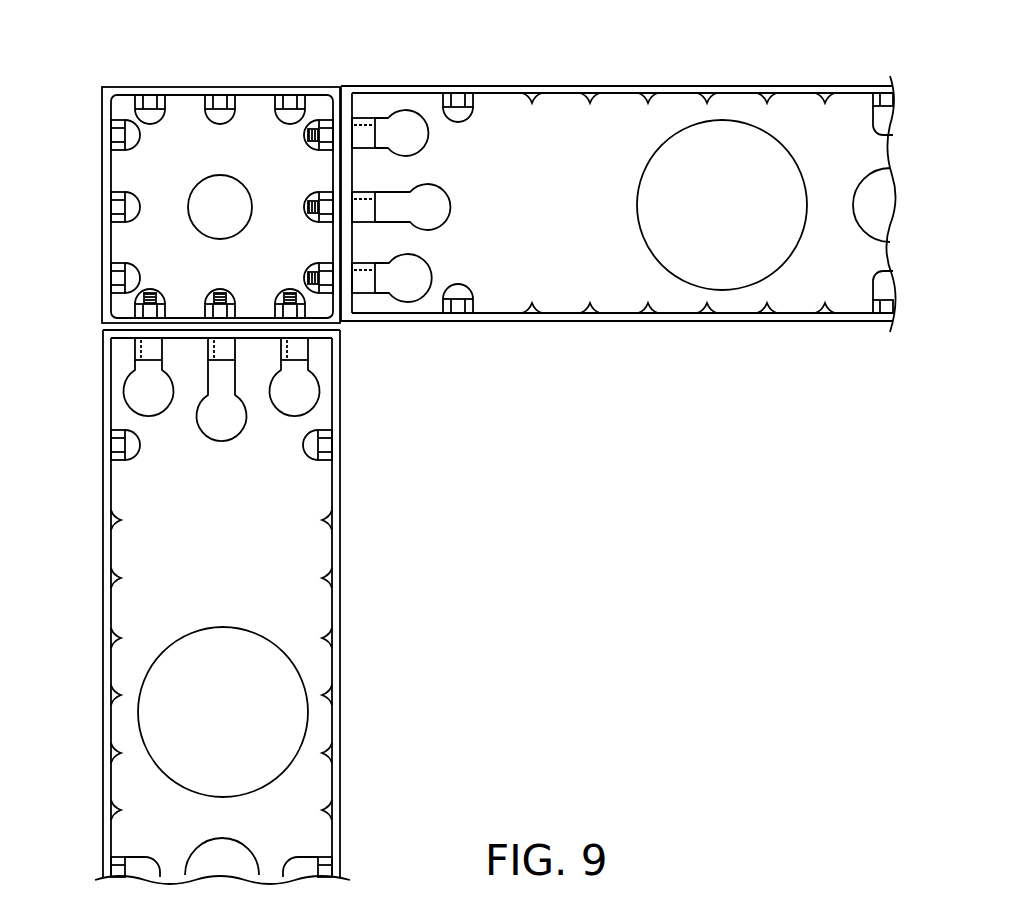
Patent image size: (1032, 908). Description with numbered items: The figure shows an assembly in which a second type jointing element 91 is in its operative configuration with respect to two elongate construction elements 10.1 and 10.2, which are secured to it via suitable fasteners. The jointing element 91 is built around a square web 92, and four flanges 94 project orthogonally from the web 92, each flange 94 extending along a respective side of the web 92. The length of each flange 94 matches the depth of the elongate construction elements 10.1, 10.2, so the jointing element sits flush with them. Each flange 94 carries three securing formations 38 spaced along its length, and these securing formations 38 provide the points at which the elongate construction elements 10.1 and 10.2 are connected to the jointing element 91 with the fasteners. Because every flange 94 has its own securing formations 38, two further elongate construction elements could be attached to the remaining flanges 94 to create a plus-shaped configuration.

The elongate construction element 10.1 is at (688, 328).
The elongate construction element 10.2 is at (350, 596).
The securing formation 38 is at (300, 84).
The second type jointing element 91 is at (96, 250).
The square web 92 is at (233, 160).
The flange 94 is at (187, 87).